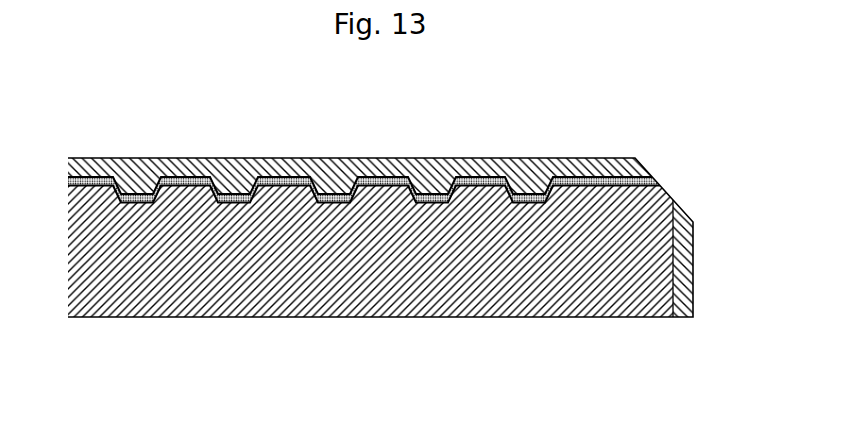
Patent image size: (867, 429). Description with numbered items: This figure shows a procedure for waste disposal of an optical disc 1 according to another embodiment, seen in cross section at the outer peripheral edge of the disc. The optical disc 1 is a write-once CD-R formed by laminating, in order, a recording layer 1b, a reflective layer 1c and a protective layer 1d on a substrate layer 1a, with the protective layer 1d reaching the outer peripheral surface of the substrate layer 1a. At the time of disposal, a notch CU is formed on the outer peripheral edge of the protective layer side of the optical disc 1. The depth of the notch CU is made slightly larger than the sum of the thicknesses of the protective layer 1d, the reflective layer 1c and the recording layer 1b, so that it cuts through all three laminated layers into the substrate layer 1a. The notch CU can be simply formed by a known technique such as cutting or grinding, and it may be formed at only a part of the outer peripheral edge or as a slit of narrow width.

The optical disc 1 is at (399, 233).
The substrate layer 1a is at (384, 300).
The recording layer 1b is at (332, 191).
The reflective layer 1c is at (430, 189).
The protective layer 1d is at (527, 171).
The notch CU is at (669, 183).